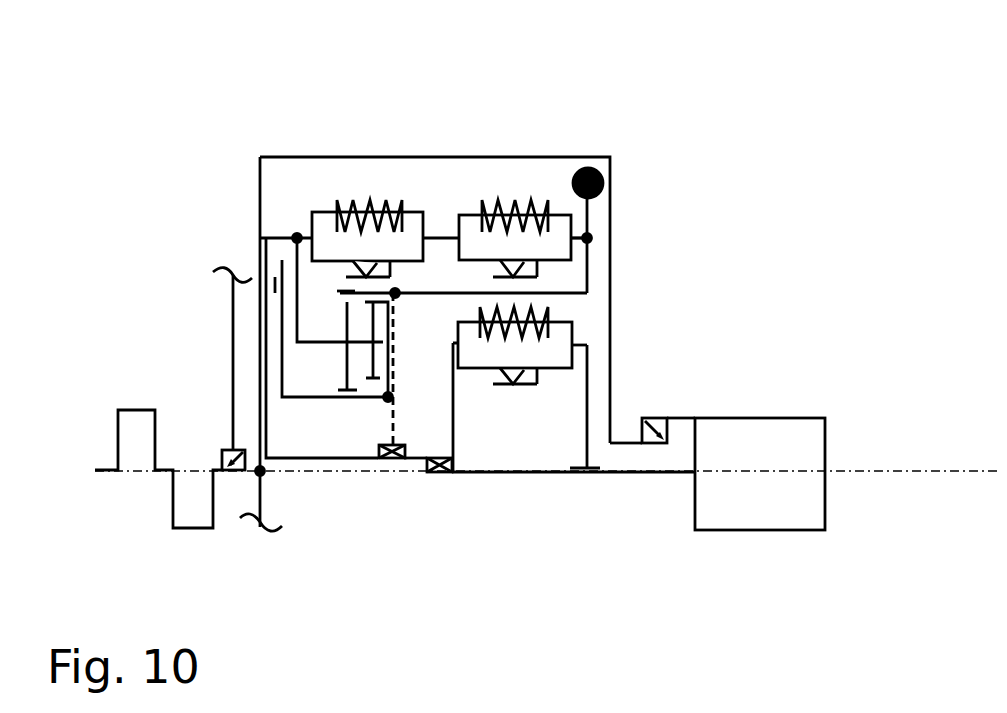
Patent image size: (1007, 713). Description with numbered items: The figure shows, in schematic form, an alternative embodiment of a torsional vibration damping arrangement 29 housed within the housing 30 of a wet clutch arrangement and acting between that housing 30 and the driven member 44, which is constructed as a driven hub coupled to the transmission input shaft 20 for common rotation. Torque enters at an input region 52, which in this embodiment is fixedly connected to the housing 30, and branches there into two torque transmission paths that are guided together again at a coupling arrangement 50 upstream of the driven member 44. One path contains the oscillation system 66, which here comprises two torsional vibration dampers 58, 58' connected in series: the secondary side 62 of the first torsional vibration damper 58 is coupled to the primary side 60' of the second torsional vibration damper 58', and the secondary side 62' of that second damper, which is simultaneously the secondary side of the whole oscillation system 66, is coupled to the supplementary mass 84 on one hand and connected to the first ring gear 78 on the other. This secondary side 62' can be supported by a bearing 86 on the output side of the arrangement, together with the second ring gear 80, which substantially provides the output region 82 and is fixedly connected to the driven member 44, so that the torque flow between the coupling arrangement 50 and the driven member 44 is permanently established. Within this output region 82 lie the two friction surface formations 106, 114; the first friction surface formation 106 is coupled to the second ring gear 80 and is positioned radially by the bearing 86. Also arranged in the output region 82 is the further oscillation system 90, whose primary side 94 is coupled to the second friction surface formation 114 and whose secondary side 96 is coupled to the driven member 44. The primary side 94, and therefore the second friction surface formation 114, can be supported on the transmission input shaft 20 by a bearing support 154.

The transmission input shaft 20 is at (679, 470).
The torsional vibration damping arrangement 29 is at (655, 115).
The housing 30 is at (612, 263).
The driven member 44 is at (597, 475).
The coupling arrangement 50 is at (318, 372).
The input region 52 is at (293, 210).
The first torsional vibration damper 58 is at (367, 157).
The second torsional vibration damper 58' is at (581, 175).
The primary side of the second torsional vibration damper 60' is at (502, 157).
The secondary side of the first torsional vibration damper 62 is at (376, 153).
The secondary side of the second torsional vibration damper 62' is at (638, 216).
The oscillation system 66 is at (502, 136).
The first ring gear 78 is at (343, 290).
The second ring gear 80 is at (347, 303).
The output region 82 is at (347, 476).
The supplementary mass 84 is at (604, 179).
The bearing 86 is at (390, 458).
The further oscillation system 90 is at (601, 335).
The primary side 94 is at (452, 393).
The secondary side 96 is at (573, 332).
The first friction surface formation 106 is at (282, 283).
The second friction surface formation 114 is at (272, 268).
The bearing support 154 is at (440, 472).